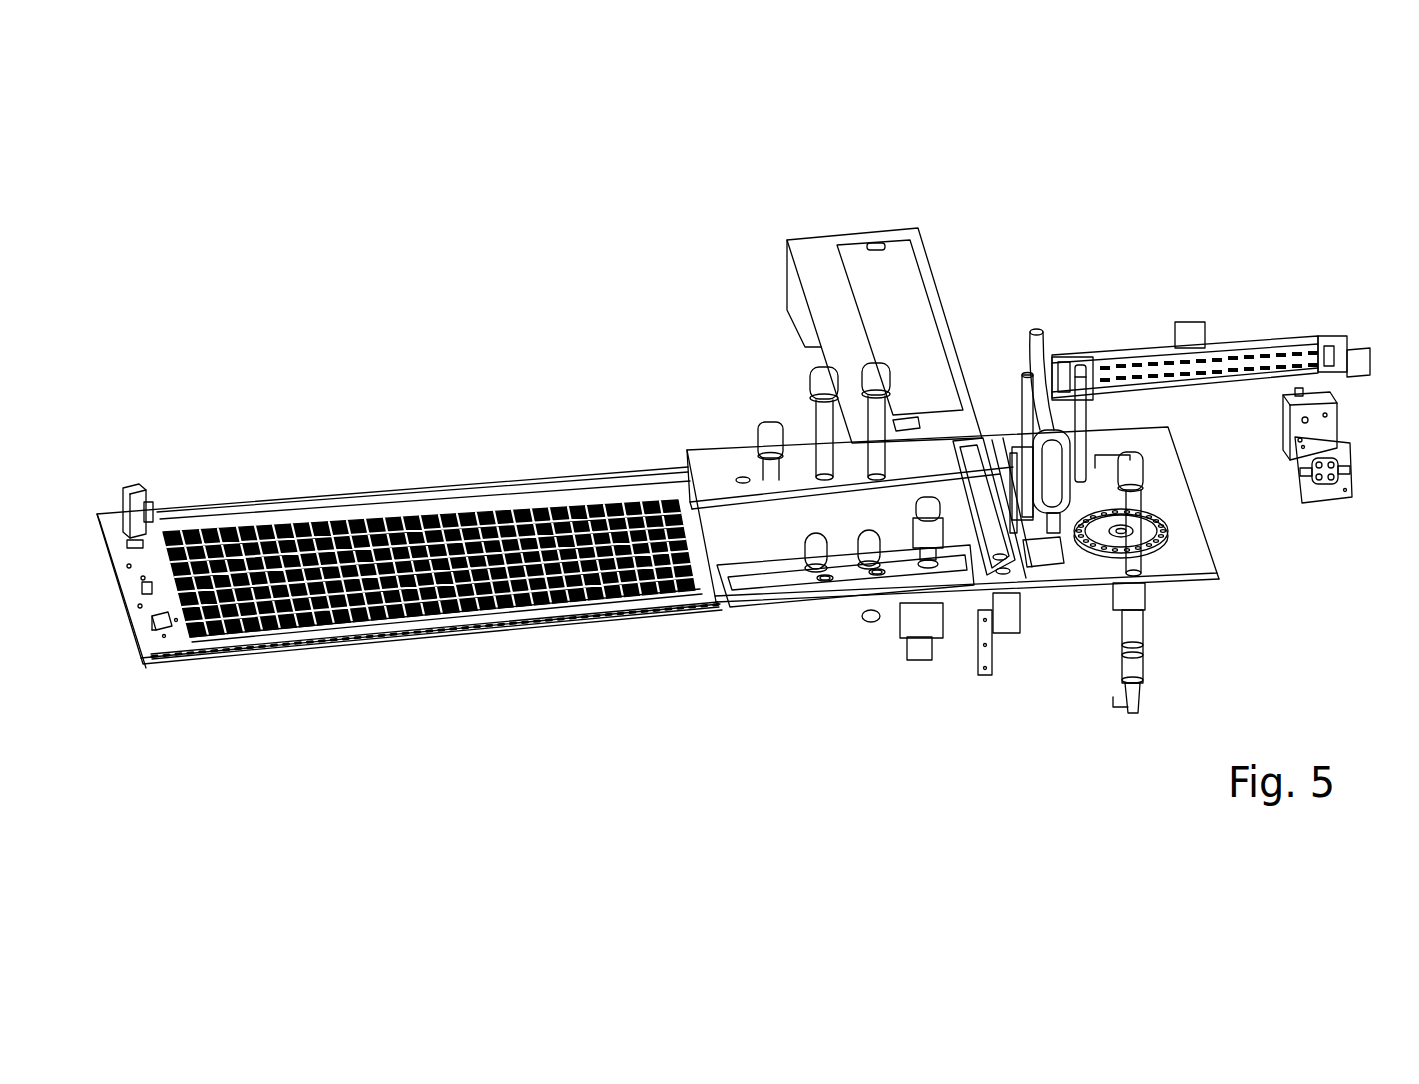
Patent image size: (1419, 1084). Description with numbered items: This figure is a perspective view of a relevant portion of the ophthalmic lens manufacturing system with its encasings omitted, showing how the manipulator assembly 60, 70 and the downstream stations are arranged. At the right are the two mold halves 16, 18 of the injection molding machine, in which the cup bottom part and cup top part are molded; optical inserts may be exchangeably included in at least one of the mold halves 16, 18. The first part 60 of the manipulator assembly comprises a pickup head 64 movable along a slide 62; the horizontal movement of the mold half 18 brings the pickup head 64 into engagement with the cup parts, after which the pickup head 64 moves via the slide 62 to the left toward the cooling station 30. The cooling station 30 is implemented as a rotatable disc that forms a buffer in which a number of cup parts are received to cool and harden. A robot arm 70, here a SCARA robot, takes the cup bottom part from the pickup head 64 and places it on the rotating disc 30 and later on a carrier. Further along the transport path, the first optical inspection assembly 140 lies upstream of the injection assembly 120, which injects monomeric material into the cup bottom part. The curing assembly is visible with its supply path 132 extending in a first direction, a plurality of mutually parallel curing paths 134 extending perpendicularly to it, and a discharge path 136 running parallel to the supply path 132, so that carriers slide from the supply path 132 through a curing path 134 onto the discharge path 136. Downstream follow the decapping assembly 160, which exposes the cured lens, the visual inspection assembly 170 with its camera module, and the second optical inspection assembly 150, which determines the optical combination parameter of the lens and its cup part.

The mold half 16 is at (1353, 487).
The mold half 18 is at (1335, 413).
The cooling station 30 is at (1178, 512).
The part of the manipulator assembly 60 is at (1211, 350).
The slide 62 is at (1258, 338).
The pickup head 64 is at (1085, 447).
The robot arm 70 is at (1027, 433).
The injection assembly 120 is at (845, 614).
The supply path 132 is at (522, 610).
The curing paths 134 is at (653, 600).
The discharge path 136 is at (478, 498).
The first optical inspection assembly 140 is at (1153, 487).
The second optical inspection assembly 150 is at (867, 365).
The decapping assembly 160 is at (762, 423).
The visual inspection assembly 170 is at (808, 370).